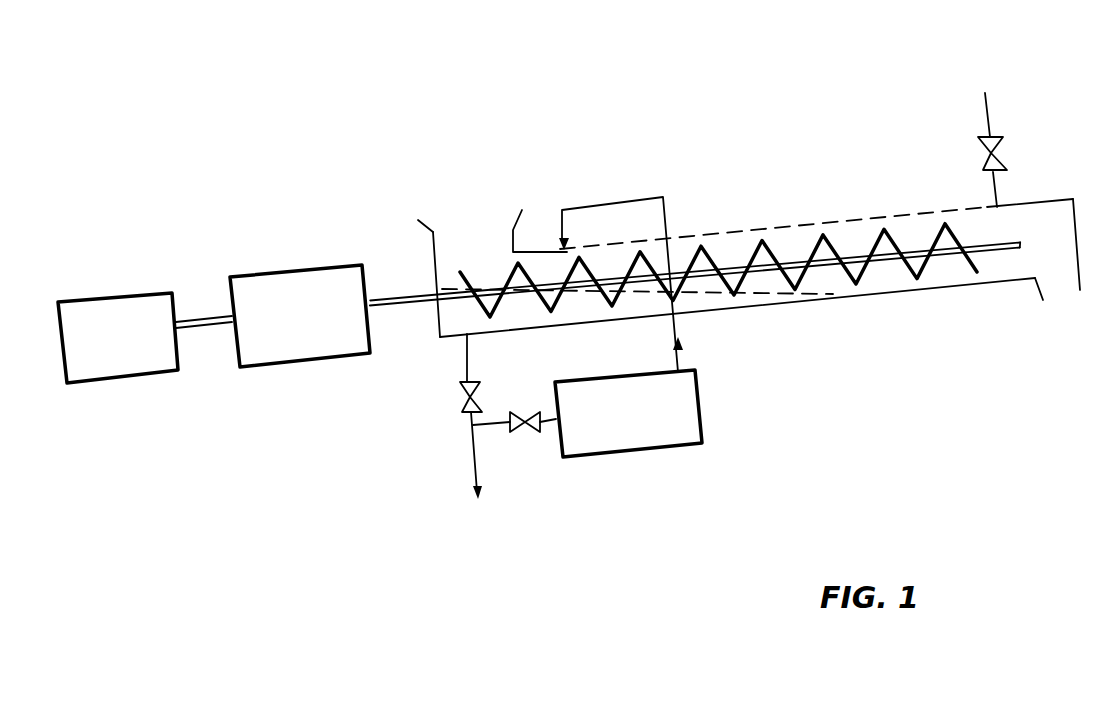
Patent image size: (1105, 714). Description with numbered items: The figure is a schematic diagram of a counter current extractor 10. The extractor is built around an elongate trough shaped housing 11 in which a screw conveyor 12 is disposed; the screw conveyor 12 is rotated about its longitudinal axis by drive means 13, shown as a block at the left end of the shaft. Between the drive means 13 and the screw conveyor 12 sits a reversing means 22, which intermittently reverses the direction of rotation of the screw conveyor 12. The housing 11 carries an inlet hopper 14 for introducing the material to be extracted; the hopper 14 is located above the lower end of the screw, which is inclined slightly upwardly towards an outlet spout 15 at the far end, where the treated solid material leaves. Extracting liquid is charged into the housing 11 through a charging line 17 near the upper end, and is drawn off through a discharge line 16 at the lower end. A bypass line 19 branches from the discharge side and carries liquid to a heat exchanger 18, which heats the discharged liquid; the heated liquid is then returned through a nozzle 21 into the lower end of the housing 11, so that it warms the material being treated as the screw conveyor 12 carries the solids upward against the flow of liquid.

The counter current extractor 10 is at (431, 340).
The housing 11 is at (865, 298).
The screw conveyor 12 is at (833, 247).
The drive means 13 is at (127, 368).
The inlet hopper 14 is at (433, 232).
The outlet spout 15 is at (1080, 290).
The discharge line 16 is at (467, 363).
The charging line 17 is at (998, 183).
The heat exchanger 18 is at (607, 447).
The bypass line 19 is at (497, 425).
The nozzle 21 is at (572, 250).
The reversing means 22 is at (282, 357).